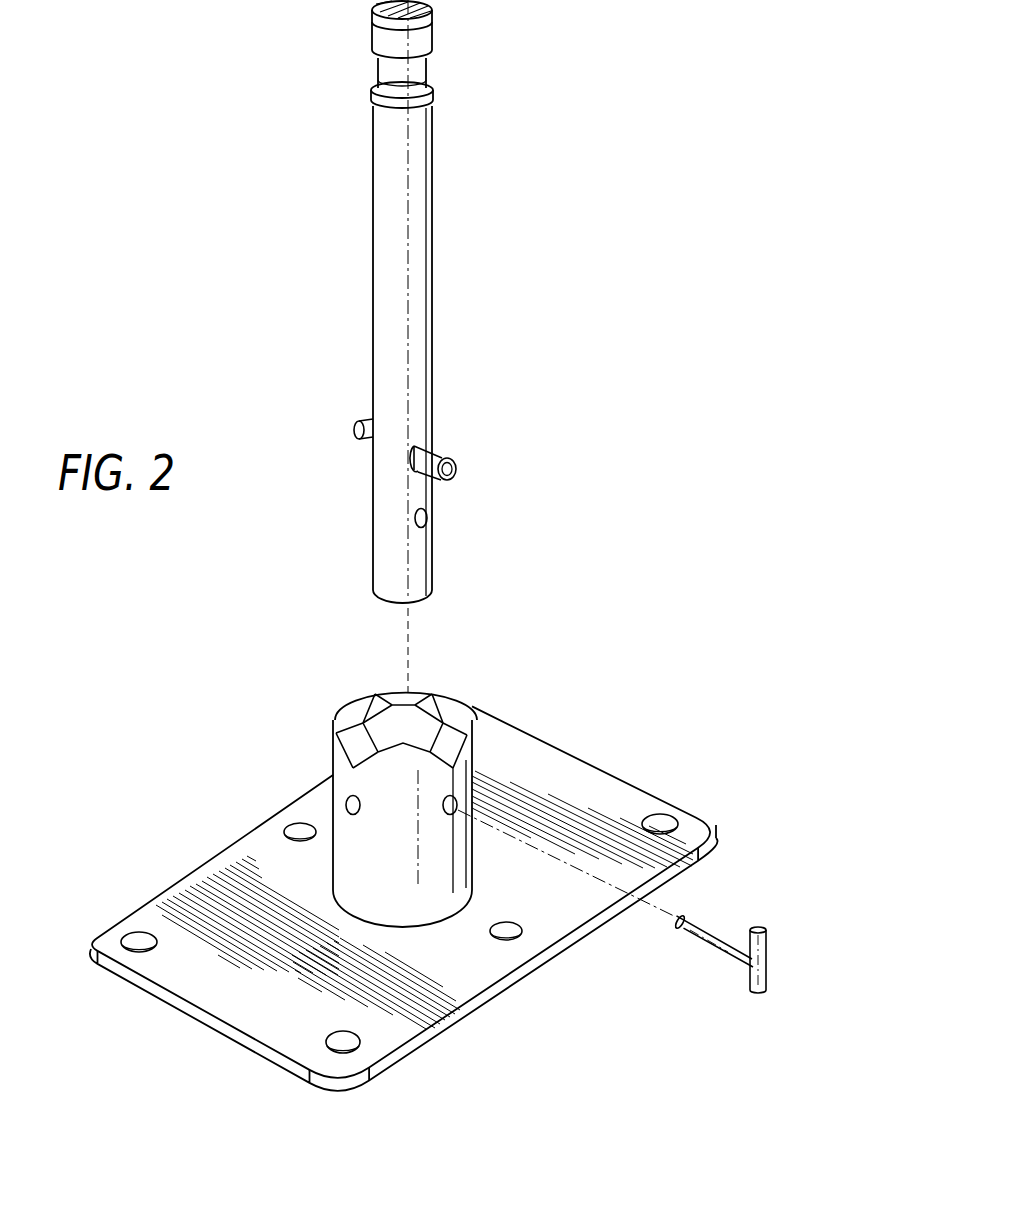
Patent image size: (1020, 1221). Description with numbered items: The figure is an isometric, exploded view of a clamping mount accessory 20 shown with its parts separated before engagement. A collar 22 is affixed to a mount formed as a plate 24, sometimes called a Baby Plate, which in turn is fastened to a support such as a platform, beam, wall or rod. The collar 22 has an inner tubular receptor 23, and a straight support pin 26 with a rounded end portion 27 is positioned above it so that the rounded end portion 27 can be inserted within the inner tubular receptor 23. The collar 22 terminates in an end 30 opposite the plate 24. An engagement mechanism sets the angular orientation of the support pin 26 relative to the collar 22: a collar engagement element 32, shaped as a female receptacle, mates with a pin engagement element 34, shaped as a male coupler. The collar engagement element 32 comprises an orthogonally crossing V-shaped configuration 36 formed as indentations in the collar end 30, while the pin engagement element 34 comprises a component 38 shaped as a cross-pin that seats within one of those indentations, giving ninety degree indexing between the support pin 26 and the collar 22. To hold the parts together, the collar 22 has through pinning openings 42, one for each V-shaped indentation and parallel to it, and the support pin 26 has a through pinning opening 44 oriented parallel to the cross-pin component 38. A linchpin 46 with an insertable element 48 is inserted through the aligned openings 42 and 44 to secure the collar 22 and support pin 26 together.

The clamping mount accessory 20 is at (606, 300).
The collar 22 is at (322, 794).
The inner tubular receptor 23 is at (388, 725).
The plate 24 is at (603, 764).
The support pin 26 is at (438, 328).
The rounded end portion 27 is at (415, 580).
The collar end 30 is at (340, 720).
The collar engagement element 32 is at (440, 692).
The pin engagement element 34 is at (343, 430).
The V-shaped configuration 36 is at (458, 740).
The cross-pin component 38 is at (442, 452).
The collar through pinning openings 42 is at (351, 810).
The support pin through pinning opening 44 is at (424, 518).
The linchpin 46 is at (780, 965).
The insertable element 48 is at (720, 926).